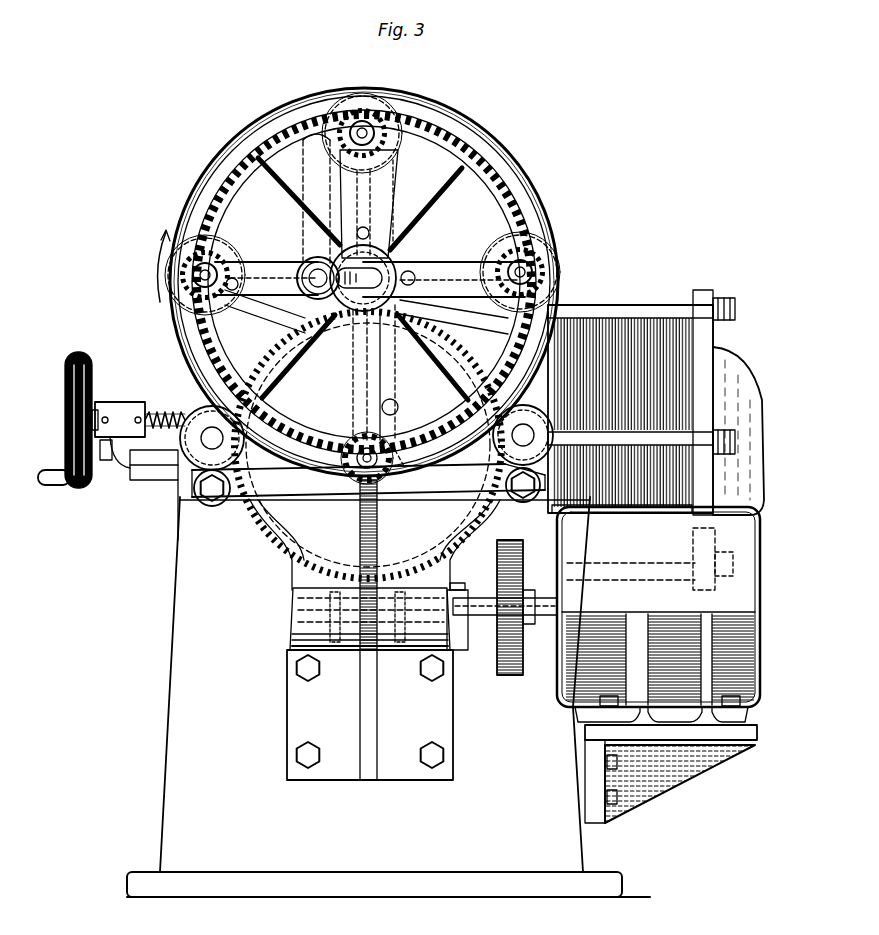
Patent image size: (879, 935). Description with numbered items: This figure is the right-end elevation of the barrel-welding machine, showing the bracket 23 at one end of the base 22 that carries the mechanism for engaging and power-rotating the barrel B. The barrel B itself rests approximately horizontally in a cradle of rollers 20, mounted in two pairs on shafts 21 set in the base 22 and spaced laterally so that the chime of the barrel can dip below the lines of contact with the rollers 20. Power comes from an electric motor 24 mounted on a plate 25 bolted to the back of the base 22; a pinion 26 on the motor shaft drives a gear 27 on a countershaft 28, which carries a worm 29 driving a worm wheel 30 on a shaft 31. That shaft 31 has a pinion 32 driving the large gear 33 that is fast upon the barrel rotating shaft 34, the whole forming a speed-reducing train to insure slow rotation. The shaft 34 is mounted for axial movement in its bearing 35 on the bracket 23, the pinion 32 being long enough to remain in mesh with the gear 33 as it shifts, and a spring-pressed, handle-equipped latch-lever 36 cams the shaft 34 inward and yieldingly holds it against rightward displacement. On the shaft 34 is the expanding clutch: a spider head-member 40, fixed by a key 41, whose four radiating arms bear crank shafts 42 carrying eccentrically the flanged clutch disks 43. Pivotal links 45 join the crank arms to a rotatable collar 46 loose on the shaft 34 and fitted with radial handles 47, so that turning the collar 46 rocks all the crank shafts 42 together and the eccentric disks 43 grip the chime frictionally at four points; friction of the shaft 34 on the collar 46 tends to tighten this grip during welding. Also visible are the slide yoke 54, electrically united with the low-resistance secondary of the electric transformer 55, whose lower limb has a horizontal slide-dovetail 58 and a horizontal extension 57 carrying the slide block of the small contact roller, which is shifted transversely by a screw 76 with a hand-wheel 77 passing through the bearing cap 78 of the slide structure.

The barrel B is at (506, 165).
The roller 20 is at (178, 488).
The shaft 21 is at (208, 435).
The base 22 is at (170, 804).
The bracket 23 is at (300, 714).
The electric motor 24 is at (748, 556).
The plate 25 is at (680, 760).
The pinion 26 is at (493, 652).
The gear 27 is at (510, 672).
The countershaft 28 is at (292, 606).
The worm 29 is at (352, 636).
The worm wheel 30 is at (268, 536).
The shaft 31 is at (362, 472).
The pinion 32 is at (396, 462).
The large gear 33 is at (516, 202).
The barrel rotating shaft 34 is at (392, 214).
The bearing 35 is at (364, 262).
The latch-lever 36 is at (290, 142).
The head-member 40 is at (284, 312).
The key 41 is at (388, 142).
The crank shaft 42 is at (366, 126).
The clutch disk 43 is at (358, 94).
The link 45 is at (330, 170).
The collar 46 is at (446, 262).
The handle 47 is at (288, 208).
The slide yoke 54 is at (760, 391).
The electric transformer 55 is at (636, 325).
The horizontal extension 57 is at (160, 480).
The slide-dovetail 58 is at (122, 470).
The screw 76 is at (158, 408).
The hand-wheel 77 is at (72, 360).
The bearing cap 78 is at (110, 402).